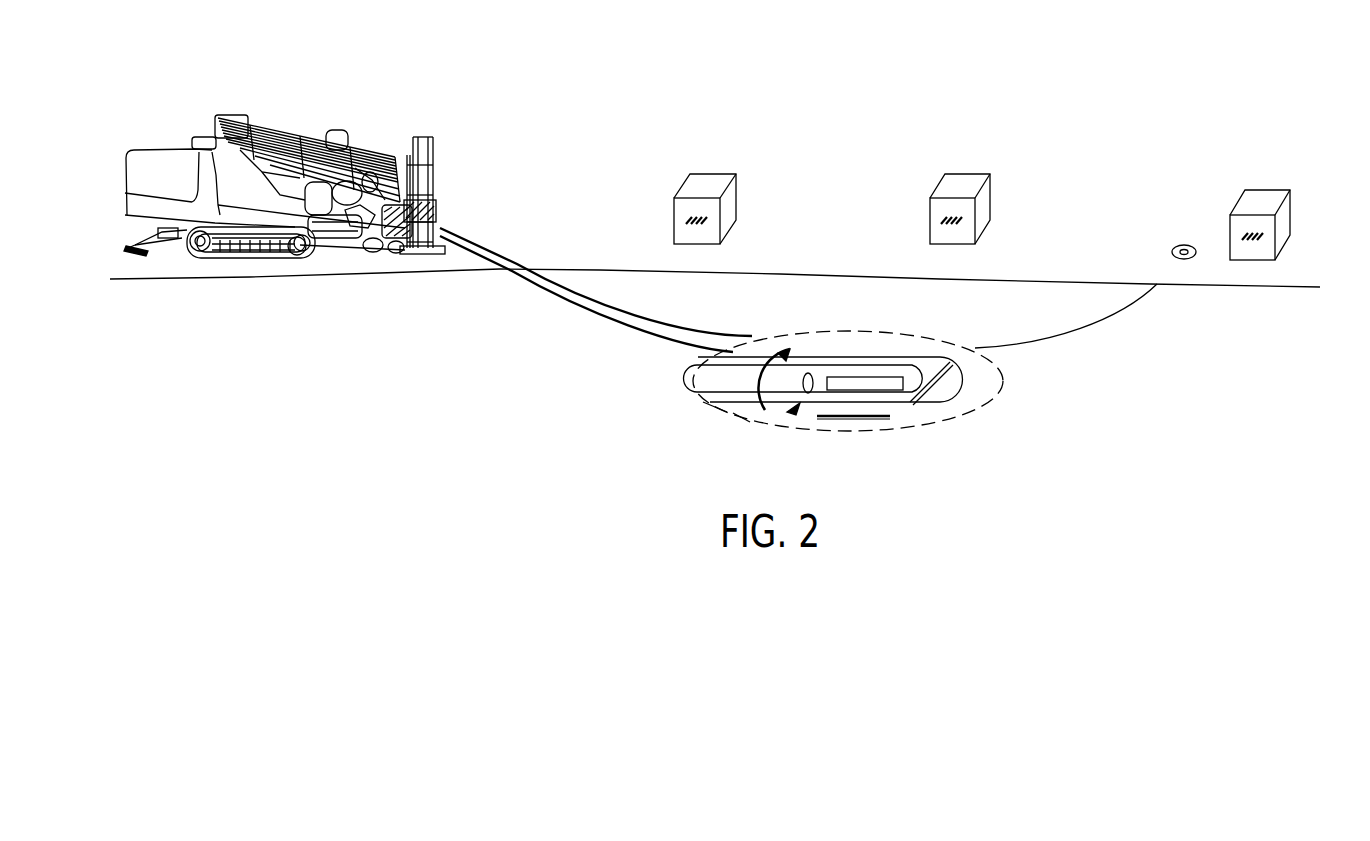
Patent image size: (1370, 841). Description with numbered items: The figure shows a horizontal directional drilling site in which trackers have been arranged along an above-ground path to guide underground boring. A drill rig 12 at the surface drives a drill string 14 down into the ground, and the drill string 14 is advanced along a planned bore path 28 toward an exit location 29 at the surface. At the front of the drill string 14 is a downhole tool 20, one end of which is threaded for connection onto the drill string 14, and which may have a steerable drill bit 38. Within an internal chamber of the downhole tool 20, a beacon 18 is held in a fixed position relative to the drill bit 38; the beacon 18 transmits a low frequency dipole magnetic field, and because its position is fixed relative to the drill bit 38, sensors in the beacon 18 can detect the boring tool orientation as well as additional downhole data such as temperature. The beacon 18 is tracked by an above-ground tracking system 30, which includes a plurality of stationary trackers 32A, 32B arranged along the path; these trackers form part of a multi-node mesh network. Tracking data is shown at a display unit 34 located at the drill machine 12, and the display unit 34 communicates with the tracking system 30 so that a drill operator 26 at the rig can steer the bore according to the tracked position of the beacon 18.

The drill rig 12 is at (304, 201).
The drill string 14 is at (598, 328).
The beacon 18 is at (842, 418).
The downhole tool 20 is at (836, 338).
The drill operator 26 is at (307, 138).
The planned bore path 28 is at (926, 357).
The exit location 29 is at (1153, 233).
The above-ground tracking system 30 is at (897, 87).
The stationary tracker 32A is at (737, 173).
The stationary tracker 32B is at (993, 179).
The display unit 34 is at (426, 233).
The steerable drill bit 38 is at (965, 411).